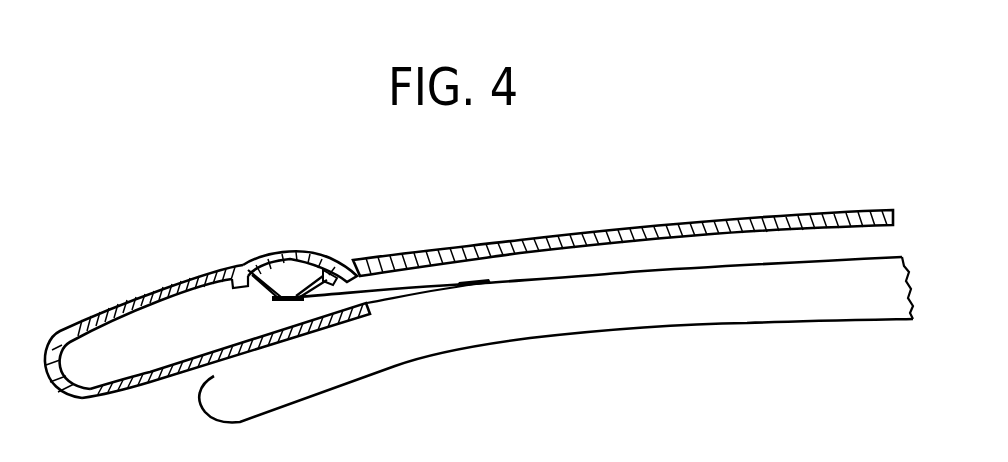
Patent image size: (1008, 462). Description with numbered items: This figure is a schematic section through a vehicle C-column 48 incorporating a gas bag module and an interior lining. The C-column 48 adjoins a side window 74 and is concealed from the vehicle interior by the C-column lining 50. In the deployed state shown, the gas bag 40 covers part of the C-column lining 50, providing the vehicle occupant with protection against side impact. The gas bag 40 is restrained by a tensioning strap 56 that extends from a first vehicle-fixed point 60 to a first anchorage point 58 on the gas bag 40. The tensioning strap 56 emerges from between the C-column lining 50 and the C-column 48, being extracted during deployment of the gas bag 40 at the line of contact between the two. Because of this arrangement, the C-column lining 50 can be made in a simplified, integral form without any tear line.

The gas bag 40 is at (633, 307).
The C-column 48 is at (140, 298).
The C-column lining 50 is at (153, 386).
The tensioning strap 56 is at (397, 292).
The first anchorage point 58 is at (475, 280).
The first vehicle-fixed point 60 is at (289, 297).
The side window 74 is at (682, 223).